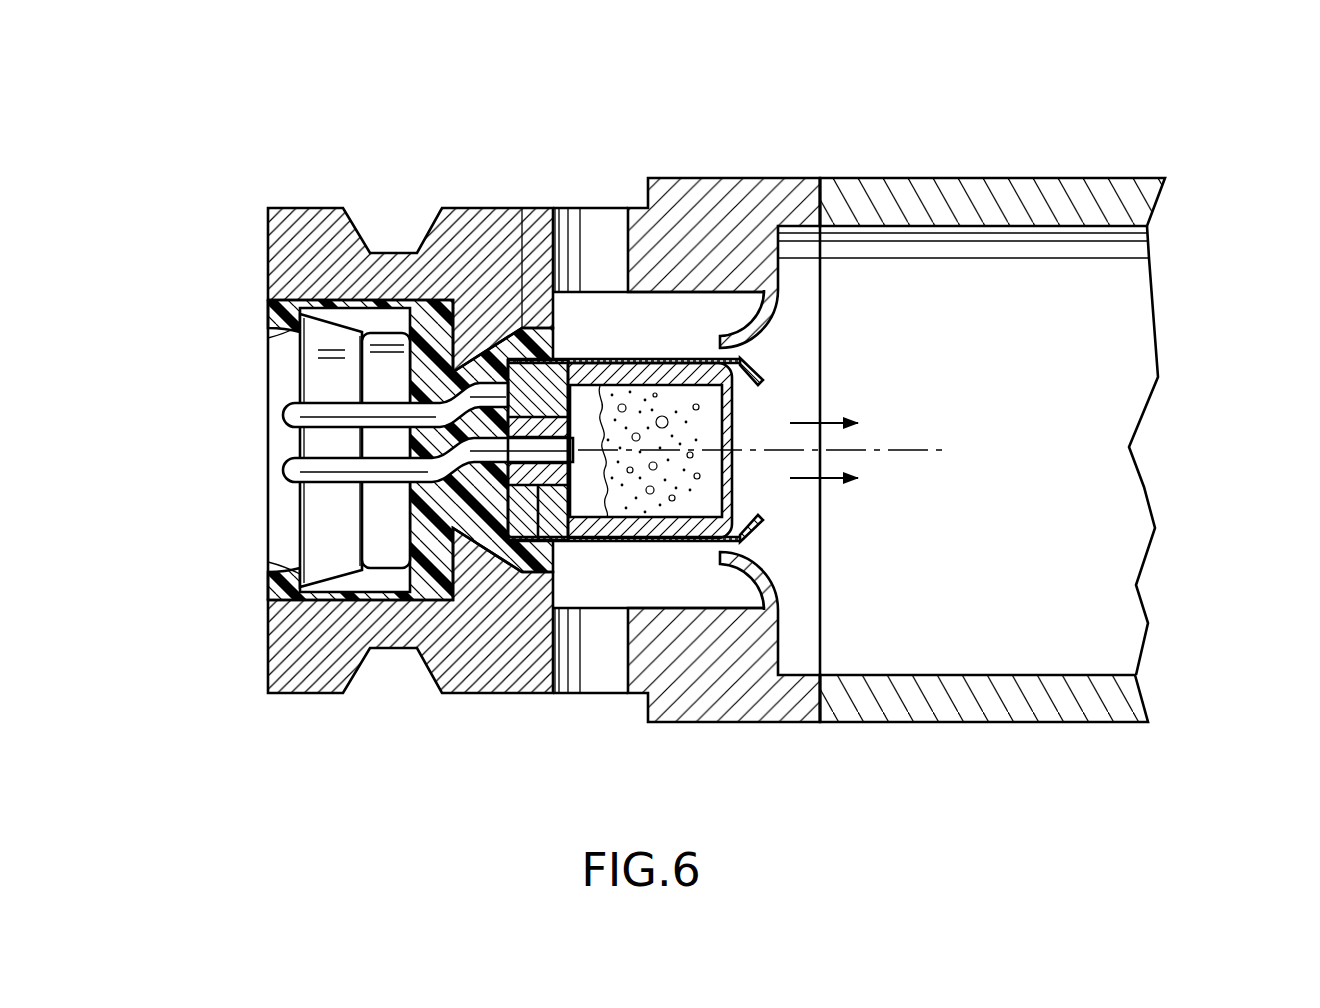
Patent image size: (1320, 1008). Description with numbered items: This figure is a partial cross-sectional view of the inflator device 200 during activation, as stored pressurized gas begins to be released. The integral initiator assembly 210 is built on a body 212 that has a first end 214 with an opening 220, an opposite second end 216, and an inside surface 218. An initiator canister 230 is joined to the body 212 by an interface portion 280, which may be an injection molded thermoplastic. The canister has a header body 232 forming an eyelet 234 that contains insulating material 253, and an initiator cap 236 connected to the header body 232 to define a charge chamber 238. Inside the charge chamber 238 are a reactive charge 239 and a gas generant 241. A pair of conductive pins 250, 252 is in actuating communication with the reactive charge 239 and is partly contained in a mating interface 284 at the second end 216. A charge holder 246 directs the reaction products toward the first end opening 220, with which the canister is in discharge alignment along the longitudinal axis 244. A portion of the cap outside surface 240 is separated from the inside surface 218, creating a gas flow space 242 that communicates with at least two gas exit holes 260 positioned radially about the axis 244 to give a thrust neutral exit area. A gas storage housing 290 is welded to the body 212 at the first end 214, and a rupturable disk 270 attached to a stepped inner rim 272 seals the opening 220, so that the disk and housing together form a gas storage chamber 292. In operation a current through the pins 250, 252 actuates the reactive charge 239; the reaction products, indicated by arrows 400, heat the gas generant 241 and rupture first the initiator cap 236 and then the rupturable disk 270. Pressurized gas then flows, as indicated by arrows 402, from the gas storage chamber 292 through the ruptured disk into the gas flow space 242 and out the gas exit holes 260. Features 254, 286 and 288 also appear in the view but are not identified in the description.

The inflator device 200 is at (1041, 489).
The integral initiator assembly 210 is at (321, 430).
The body 212 is at (888, 469).
The first end 214 is at (822, 205).
The second end 216 is at (268, 263).
The inside surface 218 is at (726, 610).
The opening 220 is at (826, 387).
The initiator canister 230 is at (543, 332).
The header body 232 is at (470, 506).
The eyelet 234 is at (548, 556).
The initiator cap 236 is at (629, 318).
The charge chamber 238 is at (790, 545).
The reactive charge 239 is at (588, 486).
The outside surface 240 is at (602, 690).
The gas generant 241 is at (668, 520).
The gas flow space 242 is at (735, 294).
The longitudinal axis 244 is at (947, 450).
The charge holder 246 is at (650, 374).
The conductive pin 250 is at (282, 470).
The conductive pin 252 is at (280, 410).
The insulating material 253 is at (482, 490).
The burst shell 254 is at (594, 384).
The gas exit holes 260 is at (588, 712).
The rupturable disk 270 is at (772, 341).
The stepped inner rim 272 is at (795, 248).
The interface portion 280 is at (537, 328).
The mating interface 284 is at (268, 438).
The retainer 286 is at (268, 562).
The groove 288 is at (385, 652).
The gas storage housing 290 is at (968, 723).
The gas storage chamber 292 is at (1118, 500).
The arrows 400 is at (792, 480).
The arrows 402 is at (758, 378).